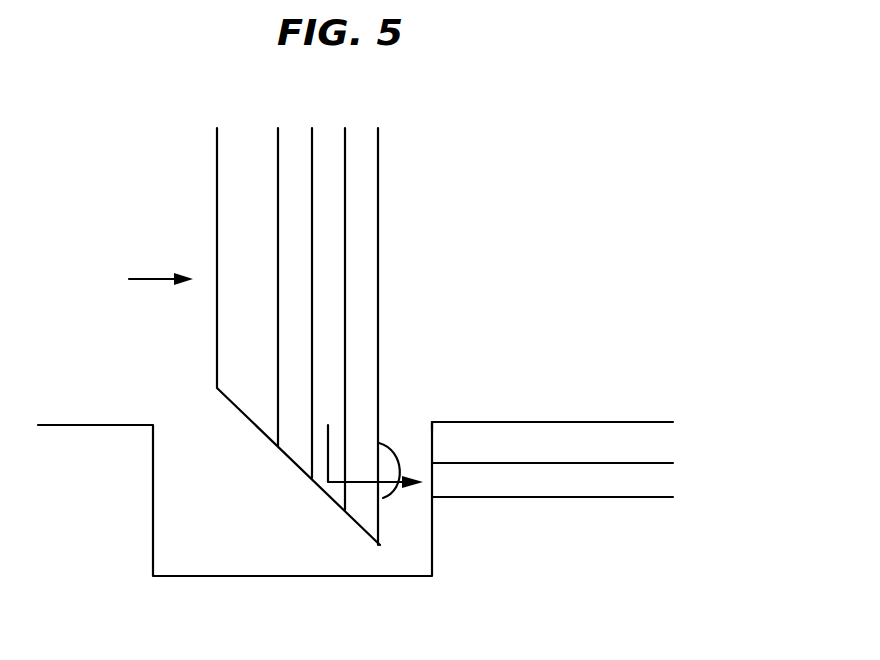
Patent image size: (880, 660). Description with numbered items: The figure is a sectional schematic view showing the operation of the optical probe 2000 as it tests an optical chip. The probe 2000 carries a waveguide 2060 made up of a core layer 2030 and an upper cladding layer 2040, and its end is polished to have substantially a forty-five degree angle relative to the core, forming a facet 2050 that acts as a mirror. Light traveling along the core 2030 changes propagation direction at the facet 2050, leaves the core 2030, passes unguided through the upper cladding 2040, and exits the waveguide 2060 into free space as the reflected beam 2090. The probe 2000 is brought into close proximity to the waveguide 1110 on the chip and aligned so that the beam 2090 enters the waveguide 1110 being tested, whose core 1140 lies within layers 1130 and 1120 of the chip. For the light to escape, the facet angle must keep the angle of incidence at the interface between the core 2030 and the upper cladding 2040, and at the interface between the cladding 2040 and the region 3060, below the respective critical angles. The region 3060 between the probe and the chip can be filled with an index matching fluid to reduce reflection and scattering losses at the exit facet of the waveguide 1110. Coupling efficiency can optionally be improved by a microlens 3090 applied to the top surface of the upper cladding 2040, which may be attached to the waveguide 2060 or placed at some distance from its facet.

The waveguide 1110 is at (538, 421).
The substrate 1120 is at (640, 562).
The top layer 1130 is at (635, 447).
The core 1140 is at (591, 489).
The optical probe 2000 is at (154, 265).
The core layer 2030 is at (330, 293).
The upper cladding layer 2040 is at (362, 340).
The facet 2050 is at (243, 415).
The waveguide 2060 is at (378, 118).
The reflected beam 2090 is at (400, 492).
The region 3060 is at (399, 434).
The microlens 3090 is at (385, 498).